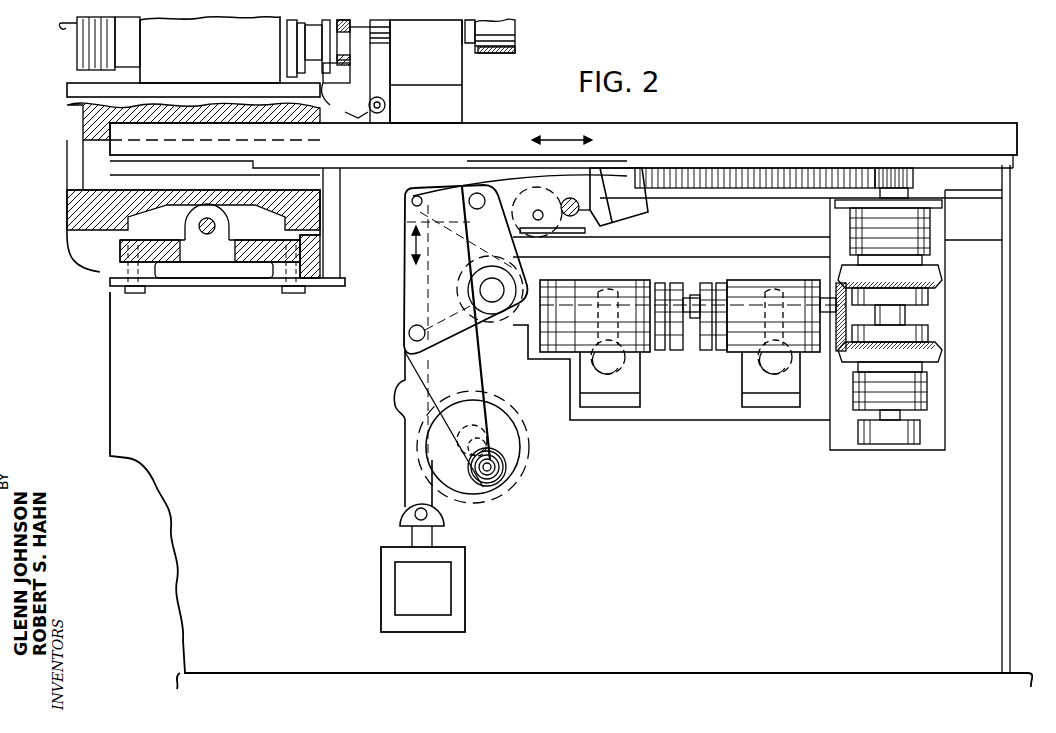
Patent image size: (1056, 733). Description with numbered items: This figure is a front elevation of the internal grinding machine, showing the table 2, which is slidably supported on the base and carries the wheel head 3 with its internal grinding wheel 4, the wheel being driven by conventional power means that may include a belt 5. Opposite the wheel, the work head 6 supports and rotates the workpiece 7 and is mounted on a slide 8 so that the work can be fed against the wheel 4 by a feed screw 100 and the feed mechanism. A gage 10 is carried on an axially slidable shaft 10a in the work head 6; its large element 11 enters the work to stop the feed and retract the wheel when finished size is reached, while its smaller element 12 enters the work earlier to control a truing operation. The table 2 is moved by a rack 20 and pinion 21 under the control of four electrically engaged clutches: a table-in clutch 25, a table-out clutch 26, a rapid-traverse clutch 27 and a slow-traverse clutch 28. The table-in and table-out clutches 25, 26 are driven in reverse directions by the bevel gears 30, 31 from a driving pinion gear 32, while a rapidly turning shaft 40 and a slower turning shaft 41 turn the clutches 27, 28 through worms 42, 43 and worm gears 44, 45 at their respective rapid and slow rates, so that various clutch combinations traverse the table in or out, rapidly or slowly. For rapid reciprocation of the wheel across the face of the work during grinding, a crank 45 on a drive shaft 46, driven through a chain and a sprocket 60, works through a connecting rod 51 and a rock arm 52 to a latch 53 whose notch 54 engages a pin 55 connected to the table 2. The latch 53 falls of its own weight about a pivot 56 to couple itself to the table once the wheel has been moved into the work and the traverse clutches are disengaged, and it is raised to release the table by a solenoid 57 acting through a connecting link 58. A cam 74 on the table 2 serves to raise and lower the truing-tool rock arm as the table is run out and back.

The table 2 is at (767, 129).
The wheel head 3 is at (462, 76).
The internal grinding wheel 4 is at (350, 30).
The belt 5 is at (515, 36).
The work head 6 is at (198, 46).
The workpiece 7 is at (368, 104).
The slide 8 is at (96, 190).
The gage 10 is at (336, 84).
The axially slidable shaft 10a is at (77, 24).
The large element 11 is at (322, 25).
The smaller element 12 is at (325, 50).
The rack 20 is at (832, 170).
The pinion 21 is at (913, 180).
The table-in clutch 25 is at (928, 236).
The table-out clutch 26 is at (930, 394).
The rapid-traverse clutch 27 is at (712, 283).
The slow-traverse clutch 28 is at (672, 283).
The bevel gear 30 is at (938, 273).
The bevel gear 31 is at (938, 354).
The driving pinion gear 32 is at (840, 348).
The rapidly turning shaft 40 is at (752, 364).
The slower turning shaft 41 is at (612, 372).
The worm 42 is at (760, 370).
The worm 43 is at (624, 364).
The worm gear 44 is at (778, 290).
The crank 45 is at (605, 282).
The drive shaft 46 is at (484, 435).
The connecting rod 51 is at (445, 370).
The rock arm 52 is at (430, 279).
The latch 53 is at (640, 194).
The notch 54 is at (590, 210).
The pin 55 is at (544, 210).
The pivot 56 is at (477, 193).
The solenoid 57 is at (412, 537).
The connecting link 58 is at (406, 456).
The sprocket 60 is at (520, 420).
The cam 74 is at (345, 116).
The feed screw 100 is at (202, 269).